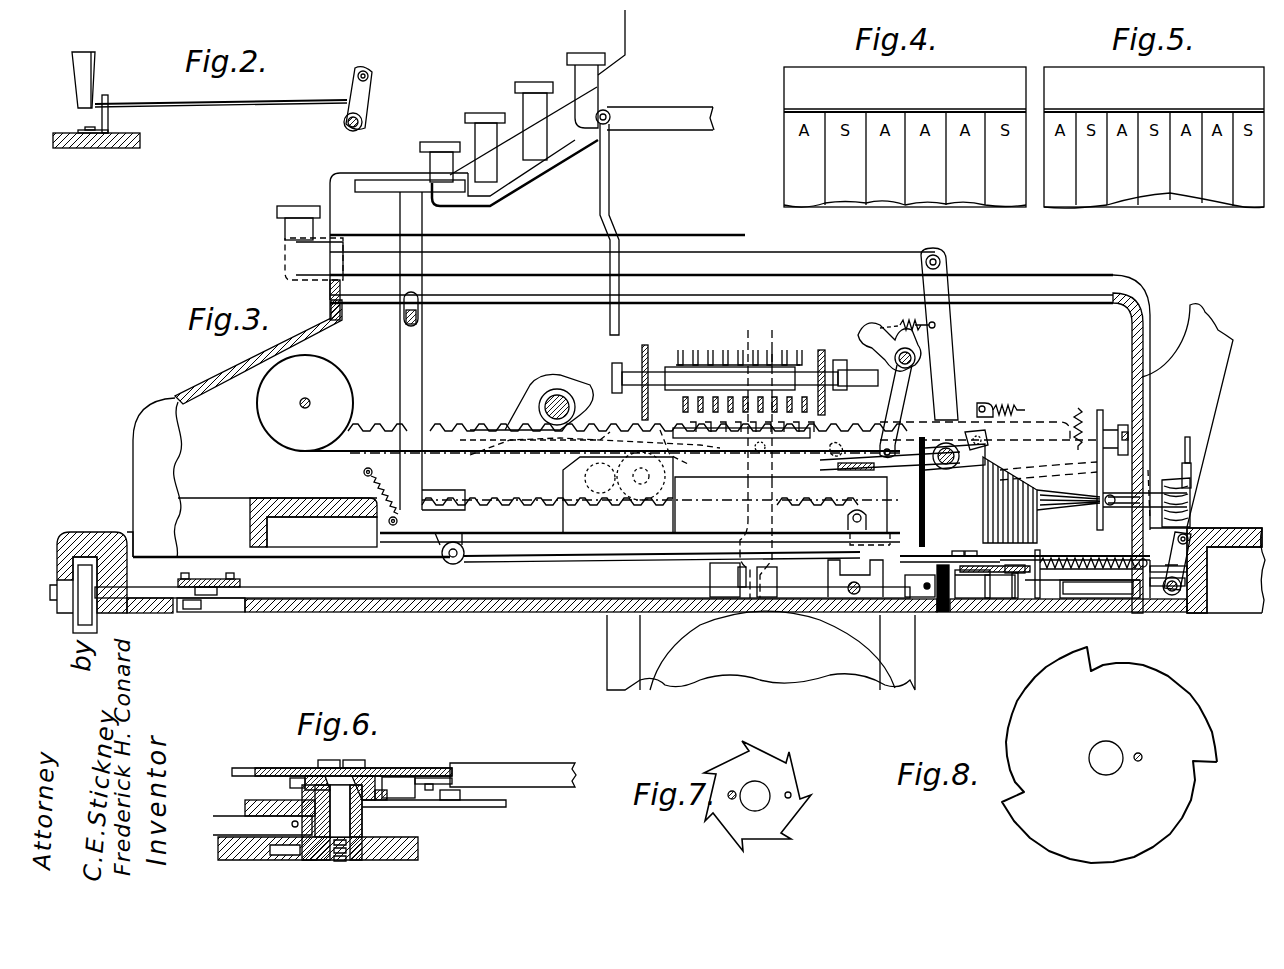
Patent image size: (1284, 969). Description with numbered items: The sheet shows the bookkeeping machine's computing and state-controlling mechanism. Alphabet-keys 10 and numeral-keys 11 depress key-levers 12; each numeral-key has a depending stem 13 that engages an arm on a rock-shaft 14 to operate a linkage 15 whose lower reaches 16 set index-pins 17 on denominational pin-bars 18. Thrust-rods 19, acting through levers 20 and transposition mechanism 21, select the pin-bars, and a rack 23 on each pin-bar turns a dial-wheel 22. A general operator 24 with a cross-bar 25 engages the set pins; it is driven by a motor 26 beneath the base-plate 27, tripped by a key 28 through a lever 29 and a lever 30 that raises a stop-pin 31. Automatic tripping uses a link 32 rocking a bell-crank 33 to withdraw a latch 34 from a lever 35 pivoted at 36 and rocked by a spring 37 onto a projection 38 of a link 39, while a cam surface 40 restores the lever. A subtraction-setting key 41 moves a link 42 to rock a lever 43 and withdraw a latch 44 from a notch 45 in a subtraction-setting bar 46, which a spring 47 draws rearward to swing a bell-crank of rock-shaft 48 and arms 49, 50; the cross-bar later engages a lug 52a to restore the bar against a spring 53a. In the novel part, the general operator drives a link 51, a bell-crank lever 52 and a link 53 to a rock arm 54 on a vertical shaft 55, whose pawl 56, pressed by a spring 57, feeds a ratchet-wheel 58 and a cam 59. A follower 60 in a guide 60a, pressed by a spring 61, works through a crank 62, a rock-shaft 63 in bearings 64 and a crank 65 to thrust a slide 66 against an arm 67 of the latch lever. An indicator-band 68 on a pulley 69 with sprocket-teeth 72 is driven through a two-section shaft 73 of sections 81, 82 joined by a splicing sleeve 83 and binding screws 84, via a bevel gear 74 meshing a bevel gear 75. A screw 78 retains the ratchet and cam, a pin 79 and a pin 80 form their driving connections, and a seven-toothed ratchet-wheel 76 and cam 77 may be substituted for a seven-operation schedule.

In FIG. 3, the alphabet-keys 10 is at (515, 88).
In FIG. 3, the numeral-keys 11 is at (584, 62).
In FIG. 3, the key-levers 12 is at (573, 146).
In FIG. 3, the depending stem 13 is at (611, 172).
In FIG. 3, the rock-shaft 14 is at (654, 375).
In FIG. 3, the linkage 15 is at (789, 349).
In FIG. 3, the lower reaches 16 is at (810, 405).
In FIG. 3, the index-pins 17 is at (810, 428).
In FIG. 3, the denominational pin-bars 18 is at (455, 432).
In FIG. 3, the thrust-rods 19 is at (1140, 525).
In FIG. 8, the thrust-rods 19 is at (1140, 752).
In FIG. 3, the levers 20 is at (1082, 504).
In FIG. 3, the transposition mechanism 21 is at (970, 512).
In FIG. 3, the dial-wheels 22 is at (305, 403).
In FIG. 3, the rack 23 is at (360, 447).
In FIG. 3, the general operator 24 is at (640, 499).
In FIG. 3, the cross-bar 25 is at (855, 470).
In FIG. 3, the motor 26 is at (761, 650).
In FIG. 3, the base-plate 27 is at (452, 612).
In FIG. 3, the key 28 is at (378, 192).
In FIG. 3, the lever 29 is at (550, 558).
In FIG. 3, the lever 30 is at (760, 578).
In FIG. 3, the stop-pin 31 is at (780, 571).
In FIG. 3, the link 32 is at (1185, 441).
In FIG. 3, the bell-crank 33 is at (1120, 488).
In FIG. 3, the latch 34 is at (1126, 428).
In FIG. 3, the lever 35 is at (1086, 465).
In FIG. 3, the pivot 36 is at (845, 442).
In FIG. 3, the spring 37 is at (1085, 410).
In FIG. 3, the projection 38 is at (742, 449).
In FIG. 3, the link 39 is at (745, 520).
In FIG. 3, the cam surface 40 is at (672, 440).
In FIG. 3, the subtraction-setting key 41 is at (305, 284).
In FIG. 3, the link 42 is at (721, 255).
In FIG. 3, the lever 43 is at (942, 285).
In FIG. 3, the latch 44 is at (966, 466).
In FIG. 3, the notch 45 is at (960, 437).
In FIG. 3, the subtraction-setting bar 46 is at (1048, 424).
In FIG. 3, the spring 47 is at (1010, 408).
In FIG. 3, the rock-shaft 48 is at (900, 362).
In FIG. 3, the arm 49 is at (897, 395).
In FIG. 3, the arm 50 is at (884, 335).
In FIG. 3, the link 51 is at (866, 584).
In FIG. 3, the bell-crank lever 52 is at (1100, 580).
In FIG. 3, the lug 52a is at (653, 476).
In FIG. 3, the link 53 is at (1028, 598).
In FIG. 6, the link 53 is at (446, 810).
In FIG. 3, the spring 53a is at (907, 317).
In FIG. 6, the rock arm 54 is at (490, 807).
In FIG. 6, the vertical shaft 55 is at (332, 823).
In FIG. 3, the pawl 56 is at (990, 598).
In FIG. 6, the pawl 56 is at (410, 798).
In FIG. 3, the spring 57 is at (1014, 598).
In FIG. 6, the spring 57 is at (452, 781).
In FIG. 3, the ratchet-wheel 58 is at (987, 566).
In FIG. 6, the ratchet-wheel 58 is at (306, 773).
In FIG. 3, the cam 59 is at (945, 555).
In FIG. 6, the cam 59 is at (433, 767).
In FIG. 3, the follower 60 is at (1113, 555).
In FIG. 6, the follower 60 is at (513, 775).
In FIG. 3, the guide 60a is at (1048, 560).
In FIG. 3, the spring 61 is at (1086, 565).
In FIG. 3, the crank 62 is at (1190, 569).
In FIG. 2, the rock-shaft 63 is at (362, 125).
In FIG. 3, the rock-shaft 63 is at (1178, 597).
In FIG. 3, the bearings 64 is at (1187, 584).
In FIG. 2, the crank 65 is at (370, 95).
In FIG. 3, the crank 65 is at (1207, 554).
In FIG. 2, the slide 66 is at (263, 104).
In FIG. 3, the slide 66 is at (1166, 560).
In FIG. 2, the arm 67 is at (65, 80).
In FIG. 3, the arm 67 is at (893, 513).
In FIG. 3, the indicator-band 68 is at (85, 533).
In FIG. 3, the pulley 69 is at (75, 626).
In FIG. 3, the sprocket-teeth 72 is at (93, 567).
In FIG. 3, the shaft 73 is at (156, 582).
In FIG. 3, the bevel gear 74 is at (944, 612).
In FIG. 6, the bevel gear 74 is at (315, 856).
In FIG. 3, the bevel gear 75 is at (975, 575).
In FIG. 6, the bevel gear 75 is at (388, 803).
In FIG. 7, the seven-toothed ratchet-wheel 76 is at (790, 790).
In FIG. 8, the cam 77 is at (1205, 797).
In FIG. 3, the screw 78 is at (958, 551).
In FIG. 6, the screw 78 is at (355, 765).
In FIG. 6, the pin 79 is at (380, 774).
In FIG. 6, the pin 80 is at (305, 790).
In FIG. 7, the pin 80 is at (737, 790).
In FIG. 3, the shaft-section 81 is at (165, 598).
In FIG. 3, the shaft-section 82 is at (330, 586).
In FIG. 6, the shaft-section 82 is at (264, 817).
In FIG. 3, the splicing sleeve 83 is at (208, 579).
In FIG. 3, the binding screws 84 is at (181, 575).